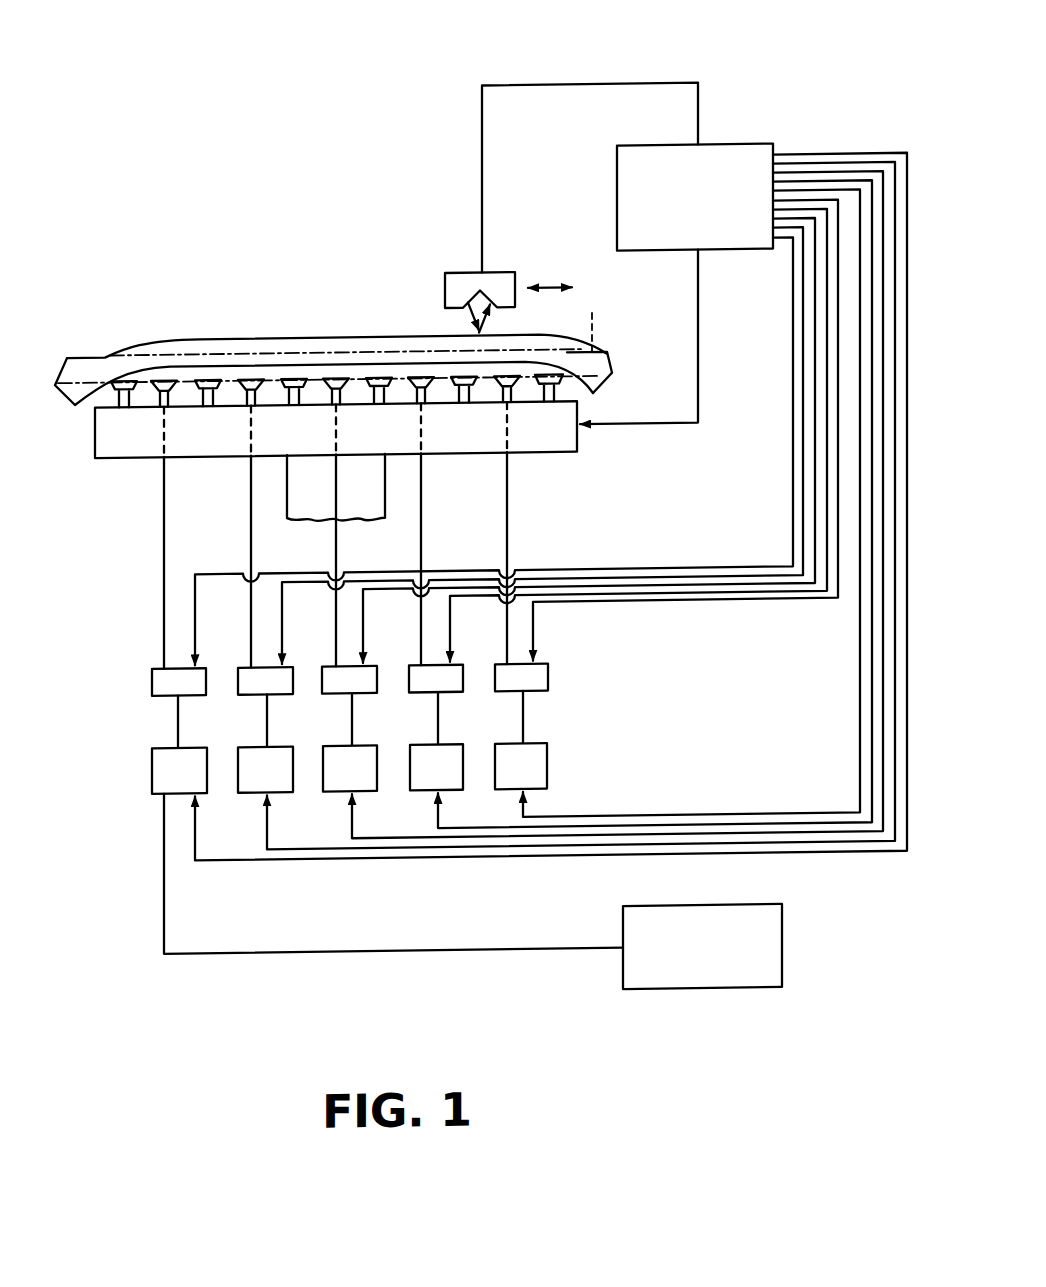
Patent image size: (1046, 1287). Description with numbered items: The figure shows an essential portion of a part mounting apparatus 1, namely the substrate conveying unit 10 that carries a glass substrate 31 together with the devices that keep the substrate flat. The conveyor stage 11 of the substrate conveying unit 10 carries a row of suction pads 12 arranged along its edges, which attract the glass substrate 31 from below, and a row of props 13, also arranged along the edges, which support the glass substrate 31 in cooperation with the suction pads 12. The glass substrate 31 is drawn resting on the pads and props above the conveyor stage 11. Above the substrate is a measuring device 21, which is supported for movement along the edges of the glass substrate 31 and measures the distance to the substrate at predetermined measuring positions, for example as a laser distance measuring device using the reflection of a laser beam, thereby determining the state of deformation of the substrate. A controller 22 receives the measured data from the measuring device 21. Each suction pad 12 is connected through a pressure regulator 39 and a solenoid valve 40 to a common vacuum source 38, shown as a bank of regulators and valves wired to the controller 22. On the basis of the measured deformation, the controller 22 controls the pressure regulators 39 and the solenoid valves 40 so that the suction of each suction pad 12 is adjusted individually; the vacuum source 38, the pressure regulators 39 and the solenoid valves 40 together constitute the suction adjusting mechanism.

The part mounting apparatus 1 is at (515, 70).
The substrate conveying unit 10 is at (368, 449).
The conveyor stage 11 is at (132, 443).
The suction pad 12 is at (500, 400).
The prop 13 is at (540, 402).
The measuring device 21 is at (446, 289).
The controller 22 is at (617, 192).
The glass substrate 31 is at (542, 339).
The vacuum source 38 is at (710, 991).
The pressure regulator 39 is at (157, 772).
The solenoid valve 40 is at (204, 682).